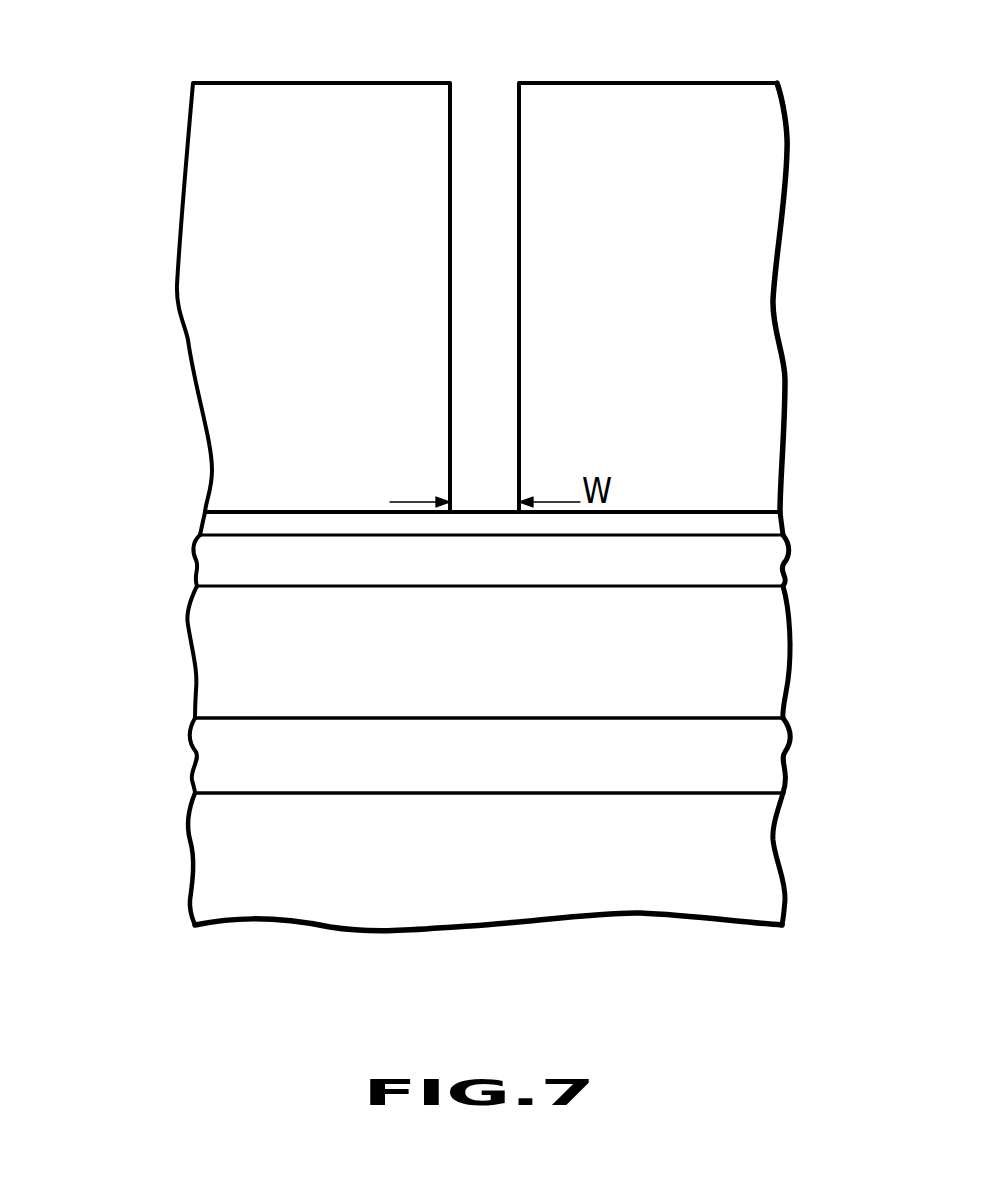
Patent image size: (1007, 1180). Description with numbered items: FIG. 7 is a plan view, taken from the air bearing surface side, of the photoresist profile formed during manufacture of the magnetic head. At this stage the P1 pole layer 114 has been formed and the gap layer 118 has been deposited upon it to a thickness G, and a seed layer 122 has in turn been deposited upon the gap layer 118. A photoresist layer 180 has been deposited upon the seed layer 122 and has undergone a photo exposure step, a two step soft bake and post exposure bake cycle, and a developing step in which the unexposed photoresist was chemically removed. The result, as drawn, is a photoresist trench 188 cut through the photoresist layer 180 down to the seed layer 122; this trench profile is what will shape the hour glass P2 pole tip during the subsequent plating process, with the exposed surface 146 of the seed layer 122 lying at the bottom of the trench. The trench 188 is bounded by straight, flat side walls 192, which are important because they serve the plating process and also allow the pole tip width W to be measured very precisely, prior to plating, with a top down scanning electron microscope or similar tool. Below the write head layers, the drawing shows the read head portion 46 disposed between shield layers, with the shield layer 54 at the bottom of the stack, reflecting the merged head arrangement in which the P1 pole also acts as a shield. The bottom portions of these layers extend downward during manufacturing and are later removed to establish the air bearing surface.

The photoresist layer 180 is at (177, 270).
The photoresist trench 188 is at (490, 104).
The side walls 192 is at (453, 262).
The seed layer 122 is at (786, 520).
The exposed surface 146 is at (486, 512).
The gap layer 118 is at (196, 552).
The P1 pole layer 114 is at (188, 628).
The read head portion 46 is at (502, 750).
The shield layer 54 is at (196, 853).